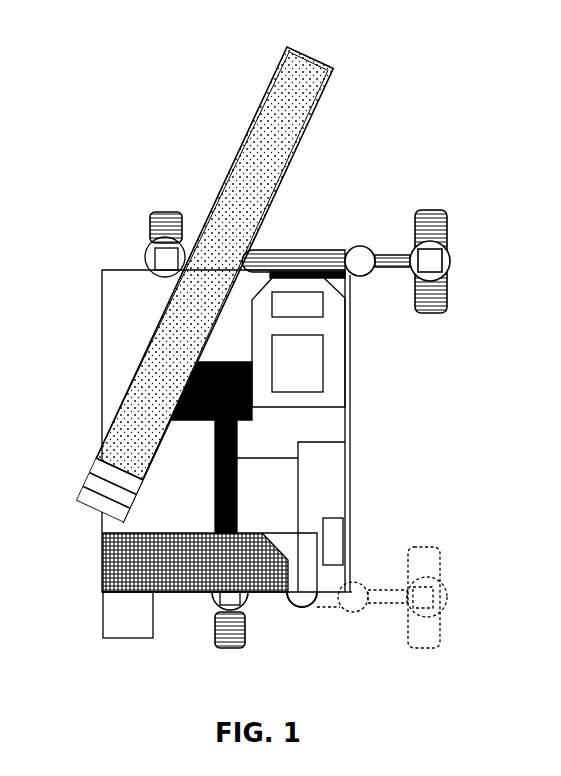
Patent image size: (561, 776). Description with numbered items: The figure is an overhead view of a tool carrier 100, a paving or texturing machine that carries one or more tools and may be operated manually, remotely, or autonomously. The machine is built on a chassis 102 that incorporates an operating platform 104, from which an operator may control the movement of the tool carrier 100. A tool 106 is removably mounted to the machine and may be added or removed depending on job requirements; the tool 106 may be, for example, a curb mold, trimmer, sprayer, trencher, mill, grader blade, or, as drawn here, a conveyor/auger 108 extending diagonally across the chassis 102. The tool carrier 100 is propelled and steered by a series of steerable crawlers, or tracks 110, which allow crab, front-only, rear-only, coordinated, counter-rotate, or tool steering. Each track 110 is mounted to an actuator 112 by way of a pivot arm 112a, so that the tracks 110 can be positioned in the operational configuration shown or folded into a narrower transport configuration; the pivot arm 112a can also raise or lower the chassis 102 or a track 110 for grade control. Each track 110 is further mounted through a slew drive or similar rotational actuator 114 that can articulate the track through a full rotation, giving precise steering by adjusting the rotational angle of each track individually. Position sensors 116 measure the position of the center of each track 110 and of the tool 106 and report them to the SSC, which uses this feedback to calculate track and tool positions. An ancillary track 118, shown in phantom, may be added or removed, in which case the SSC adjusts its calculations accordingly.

The tool carrier 100 is at (85, 66).
The chassis 102 is at (70, 280).
The operating platform 104 is at (353, 470).
The tool 106 is at (127, 638).
The conveyor/auger 108 is at (237, 150).
The track 110 is at (168, 210).
The actuator 112 is at (360, 246).
The pivot arm 112a is at (400, 264).
The rotational actuator 114 is at (447, 258).
The position sensor 116 is at (442, 265).
The ancillary track 118 is at (422, 650).